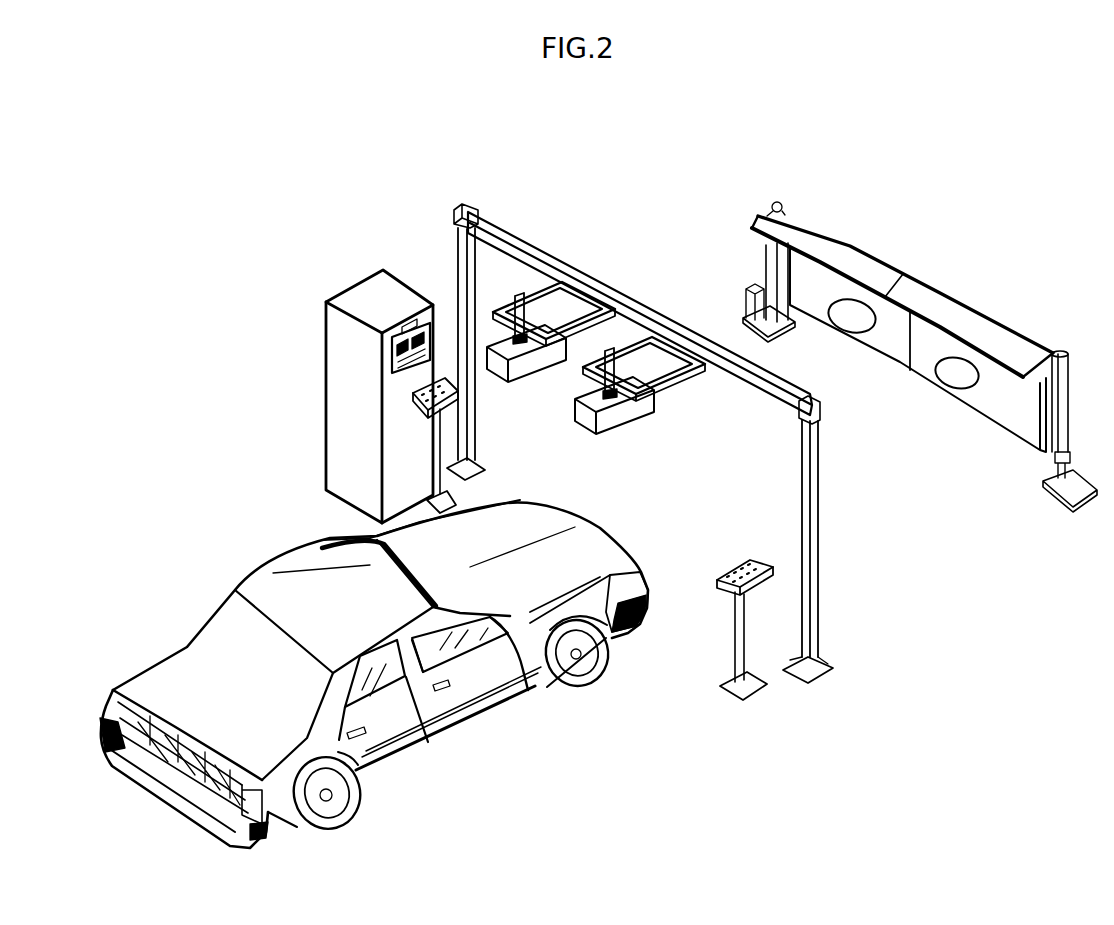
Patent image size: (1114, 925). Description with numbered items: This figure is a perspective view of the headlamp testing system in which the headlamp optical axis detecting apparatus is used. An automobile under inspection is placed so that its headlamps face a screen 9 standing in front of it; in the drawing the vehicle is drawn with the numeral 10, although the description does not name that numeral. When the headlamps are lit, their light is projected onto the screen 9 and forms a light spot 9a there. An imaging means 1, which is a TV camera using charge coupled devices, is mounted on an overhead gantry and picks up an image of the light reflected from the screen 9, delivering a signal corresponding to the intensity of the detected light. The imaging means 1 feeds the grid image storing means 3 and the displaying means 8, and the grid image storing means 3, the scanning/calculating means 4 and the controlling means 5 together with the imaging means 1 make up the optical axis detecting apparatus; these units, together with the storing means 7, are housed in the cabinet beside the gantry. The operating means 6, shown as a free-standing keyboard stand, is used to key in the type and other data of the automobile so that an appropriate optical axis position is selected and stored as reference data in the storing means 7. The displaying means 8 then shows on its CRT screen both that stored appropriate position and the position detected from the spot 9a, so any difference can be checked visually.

The imaging means 1 is at (560, 353).
The grid image storing means 3 is at (310, 396).
The scanning/calculating means 4 is at (310, 396).
The controlling means 5 is at (310, 396).
The storing means 7 is at (390, 433).
The operating means 6 is at (717, 587).
The displaying means 8 is at (435, 352).
The screen 9 is at (958, 380).
The light spot 9a is at (853, 327).
The vehicle 10 is at (642, 570).